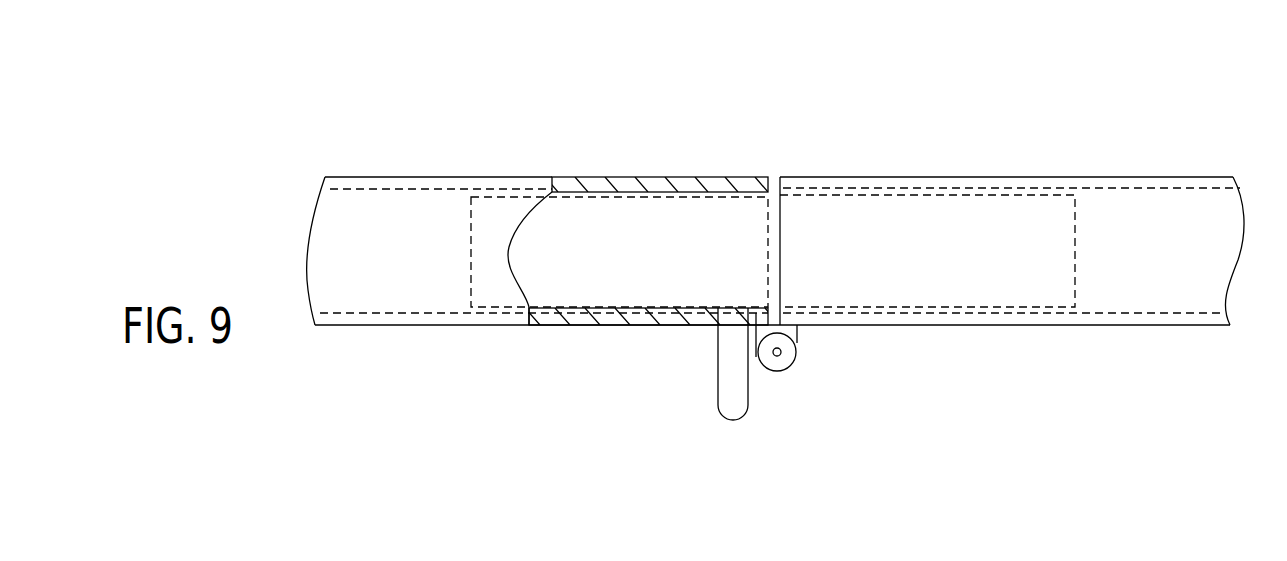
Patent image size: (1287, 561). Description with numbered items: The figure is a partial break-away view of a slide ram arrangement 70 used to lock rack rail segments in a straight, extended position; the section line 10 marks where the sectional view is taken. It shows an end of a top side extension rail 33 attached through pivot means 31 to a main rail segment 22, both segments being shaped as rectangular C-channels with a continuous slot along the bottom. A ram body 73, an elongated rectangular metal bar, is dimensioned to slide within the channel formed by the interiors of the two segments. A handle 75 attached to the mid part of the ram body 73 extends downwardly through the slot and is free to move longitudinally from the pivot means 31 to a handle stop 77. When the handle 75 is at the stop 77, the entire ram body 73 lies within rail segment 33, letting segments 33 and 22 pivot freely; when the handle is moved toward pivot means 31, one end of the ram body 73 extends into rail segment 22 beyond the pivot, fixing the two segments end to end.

The section line 10- 10 is at (664, 120).
The main rail segment 22 is at (1155, 220).
The pivot means 31 is at (781, 352).
The top side extension rail 33 is at (400, 297).
The slide ram arrangement 70 is at (904, 140).
The ram body 73 is at (612, 280).
The handle 75 is at (732, 367).
The handle stop 77 is at (485, 315).